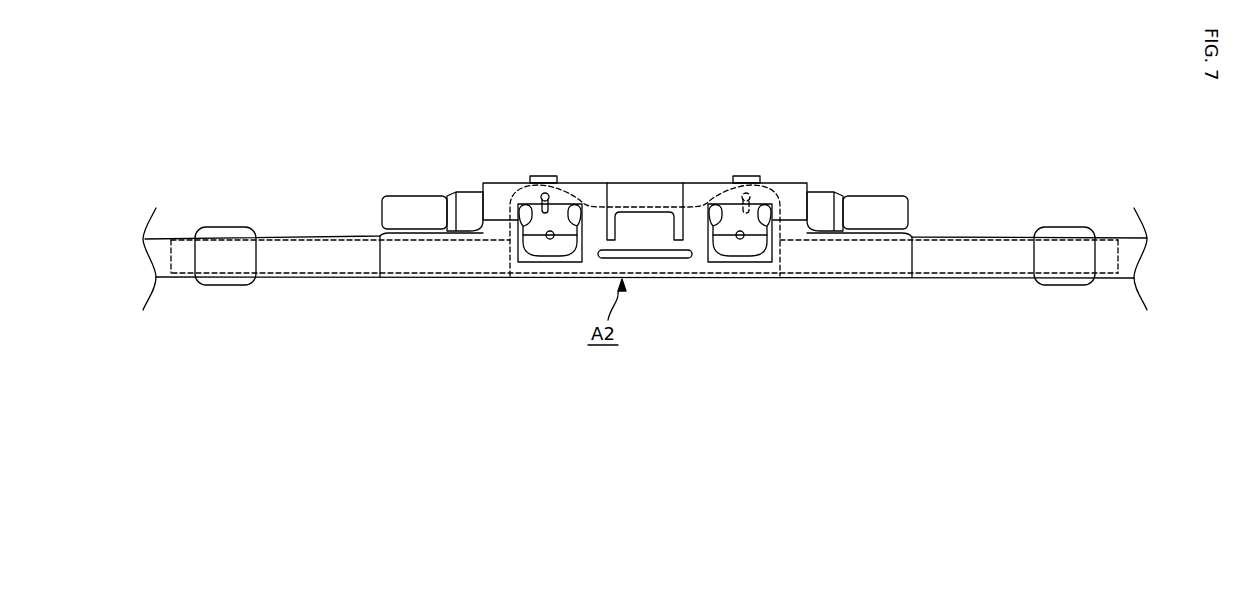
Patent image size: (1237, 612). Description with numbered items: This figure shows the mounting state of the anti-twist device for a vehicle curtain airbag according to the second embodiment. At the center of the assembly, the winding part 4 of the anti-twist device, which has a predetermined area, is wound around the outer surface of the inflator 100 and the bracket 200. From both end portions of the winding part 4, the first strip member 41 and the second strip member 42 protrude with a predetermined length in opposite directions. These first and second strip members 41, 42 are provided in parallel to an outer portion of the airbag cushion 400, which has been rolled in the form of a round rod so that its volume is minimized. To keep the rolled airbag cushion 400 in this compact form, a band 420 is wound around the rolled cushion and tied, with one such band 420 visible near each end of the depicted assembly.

The winding part 4 is at (700, 263).
The first strip member 41 is at (973, 250).
The second strip member 42 is at (300, 250).
The inflator 100 is at (417, 205).
The bracket 200 is at (786, 188).
The airbag cushion 400 is at (1132, 248).
The band 420 is at (226, 231).